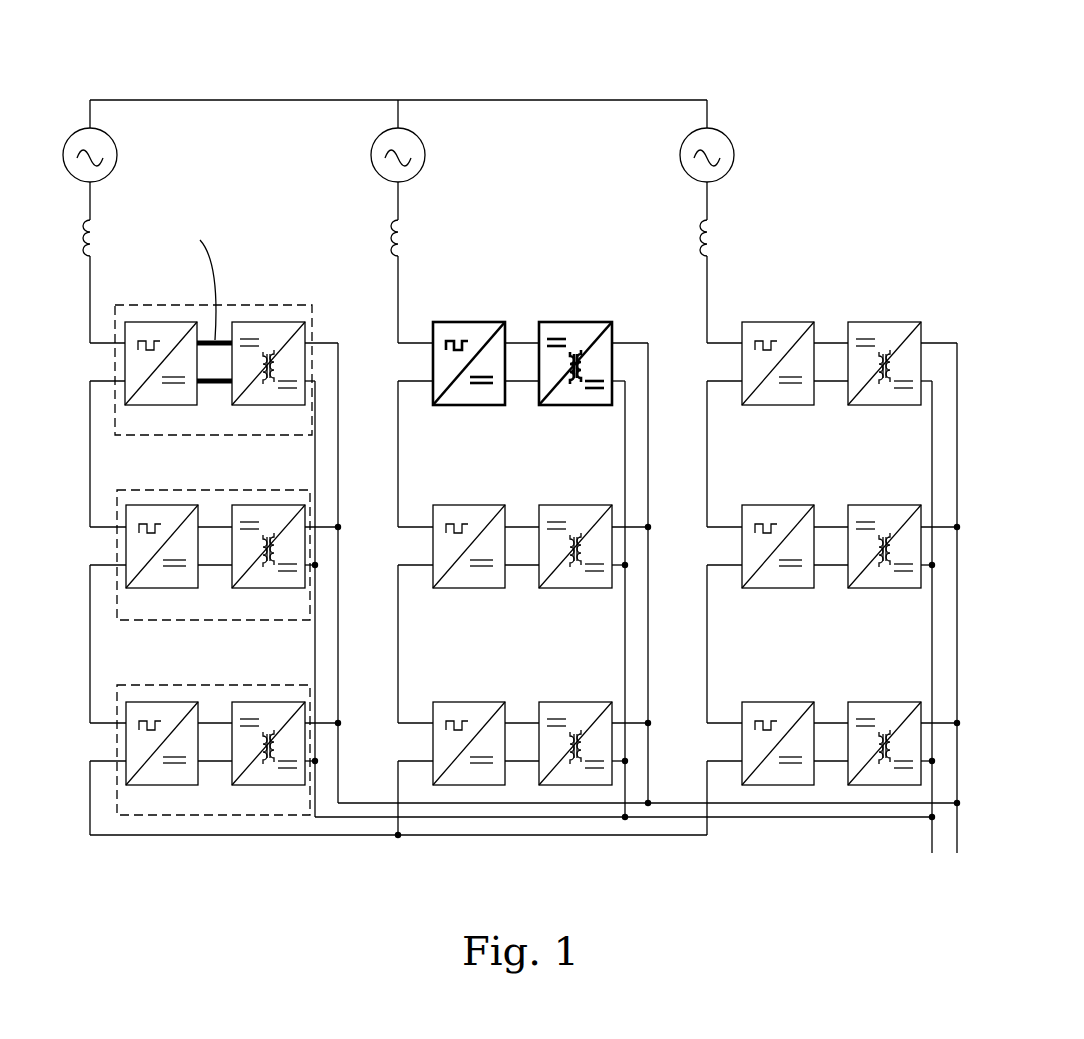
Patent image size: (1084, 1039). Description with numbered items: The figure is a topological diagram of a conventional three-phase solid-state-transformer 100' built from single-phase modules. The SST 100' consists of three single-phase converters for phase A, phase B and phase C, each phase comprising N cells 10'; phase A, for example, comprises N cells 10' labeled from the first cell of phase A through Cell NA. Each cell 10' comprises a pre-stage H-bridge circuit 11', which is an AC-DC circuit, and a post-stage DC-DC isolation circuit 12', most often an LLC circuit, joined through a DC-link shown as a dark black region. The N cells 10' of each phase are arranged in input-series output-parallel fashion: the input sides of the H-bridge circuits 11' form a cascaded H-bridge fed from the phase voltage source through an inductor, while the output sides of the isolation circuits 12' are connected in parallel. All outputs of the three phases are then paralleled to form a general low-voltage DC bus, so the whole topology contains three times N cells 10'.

The three-phase solid-state-transformer 100' is at (502, 466).
The cell 10' is at (190, 330).
The pre-stage H-bridge circuit 11' is at (165, 332).
The post-stage DC-DC isolation circuit 12' is at (281, 332).